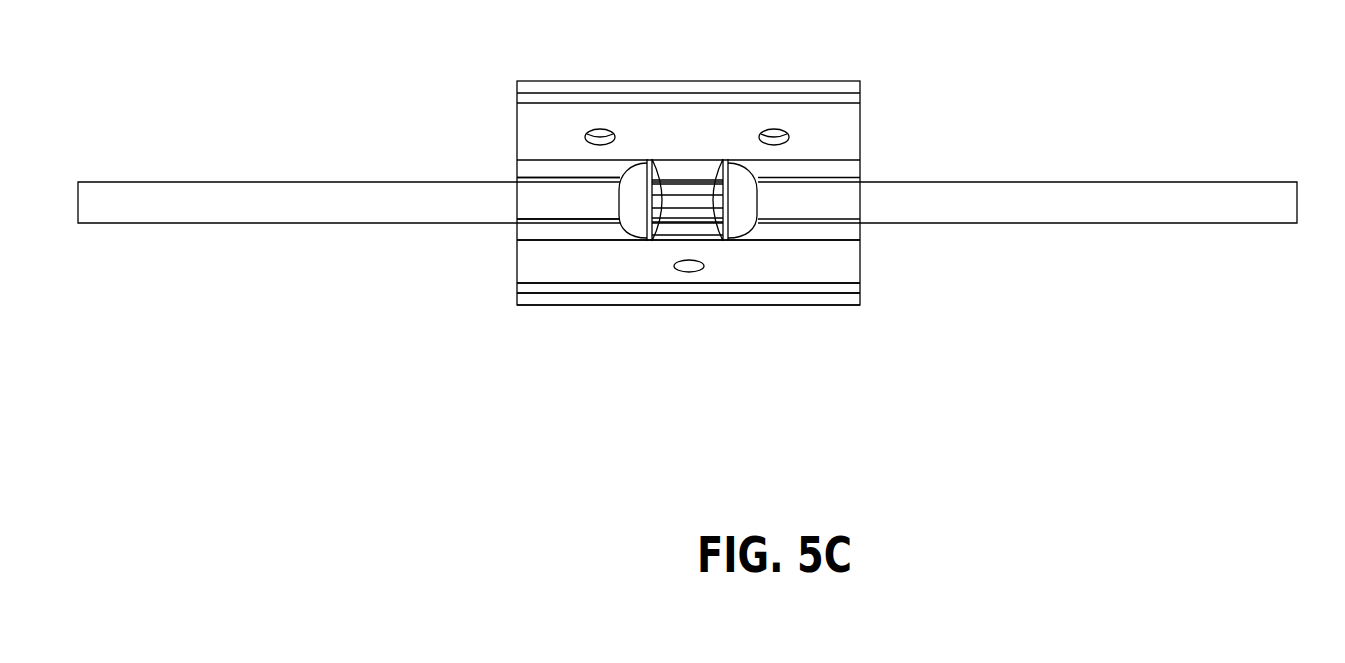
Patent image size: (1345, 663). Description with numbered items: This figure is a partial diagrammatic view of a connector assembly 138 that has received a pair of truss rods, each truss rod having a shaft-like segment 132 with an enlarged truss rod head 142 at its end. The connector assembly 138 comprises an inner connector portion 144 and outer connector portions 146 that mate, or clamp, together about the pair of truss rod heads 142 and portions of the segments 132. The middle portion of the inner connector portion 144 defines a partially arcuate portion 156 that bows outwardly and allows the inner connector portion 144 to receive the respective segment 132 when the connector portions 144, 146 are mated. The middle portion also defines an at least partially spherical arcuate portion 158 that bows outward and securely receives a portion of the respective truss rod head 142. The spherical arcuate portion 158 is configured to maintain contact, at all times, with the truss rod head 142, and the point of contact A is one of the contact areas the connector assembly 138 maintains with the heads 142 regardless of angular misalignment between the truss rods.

The segment 132 is at (129, 187).
The connector assembly 138 is at (757, 49).
The truss rod head 142 is at (756, 193).
The inner connector portion 144 is at (870, 255).
The outer connector portion 146 is at (801, 326).
The partially arcuate portion 156 is at (532, 200).
The at least partially spherical arcuate portion 158 is at (638, 192).
The point of contact A is at (727, 193).